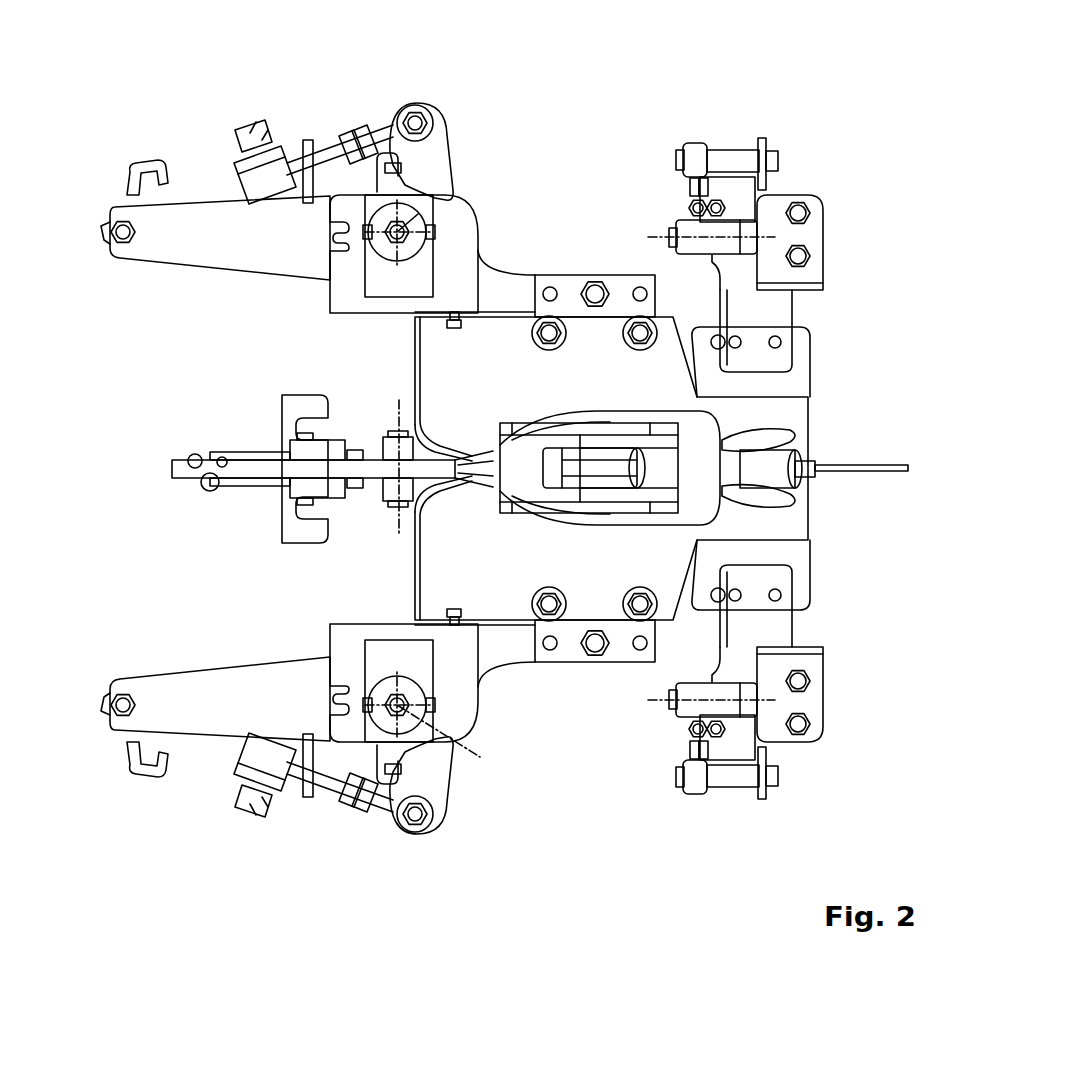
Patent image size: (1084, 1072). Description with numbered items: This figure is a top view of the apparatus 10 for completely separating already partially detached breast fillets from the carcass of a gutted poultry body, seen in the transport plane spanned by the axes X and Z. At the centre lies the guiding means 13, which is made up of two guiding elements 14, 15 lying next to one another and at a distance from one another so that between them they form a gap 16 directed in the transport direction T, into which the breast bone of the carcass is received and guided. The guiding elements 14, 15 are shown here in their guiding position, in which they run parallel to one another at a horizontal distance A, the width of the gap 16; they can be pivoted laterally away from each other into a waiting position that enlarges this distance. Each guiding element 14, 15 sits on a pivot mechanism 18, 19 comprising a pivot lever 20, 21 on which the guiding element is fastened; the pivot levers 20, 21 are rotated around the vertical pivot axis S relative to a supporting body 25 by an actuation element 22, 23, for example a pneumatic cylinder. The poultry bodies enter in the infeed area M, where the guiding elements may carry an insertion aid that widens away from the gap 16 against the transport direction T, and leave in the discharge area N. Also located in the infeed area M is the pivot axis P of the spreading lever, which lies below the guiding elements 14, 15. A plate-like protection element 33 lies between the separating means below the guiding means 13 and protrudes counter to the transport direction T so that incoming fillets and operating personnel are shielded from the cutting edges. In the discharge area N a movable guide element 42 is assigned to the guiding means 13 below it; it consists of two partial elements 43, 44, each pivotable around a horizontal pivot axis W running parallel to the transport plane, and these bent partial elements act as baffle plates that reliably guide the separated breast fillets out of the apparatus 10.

The apparatus 10 is at (840, 99).
The guiding means 13 is at (680, 320).
The guiding element 14 is at (475, 372).
The guiding element 15 is at (460, 577).
The gap 16 is at (475, 462).
The pivot mechanism 18 is at (316, 88).
The pivot mechanism 19 is at (297, 816).
The pivot lever 20 is at (455, 125).
The pivot lever 21 is at (433, 783).
The actuation element 22 is at (310, 130).
The actuation element 23 is at (260, 806).
The supporting body 25 is at (450, 222).
The protection element 33 is at (873, 474).
The guide element 42 is at (810, 610).
The partial element 43 is at (780, 378).
The partial element 44 is at (782, 557).
The pivot axis S is at (447, 178).
The pivot axis W is at (660, 237).
The transport direction T is at (155, 468).
The infeed area M is at (391, 520).
The pivot axis P is at (399, 408).
The distance A is at (493, 398).
The discharge area N is at (861, 417).
The X axis X is at (103, 617).
The Z axis Z is at (103, 617).